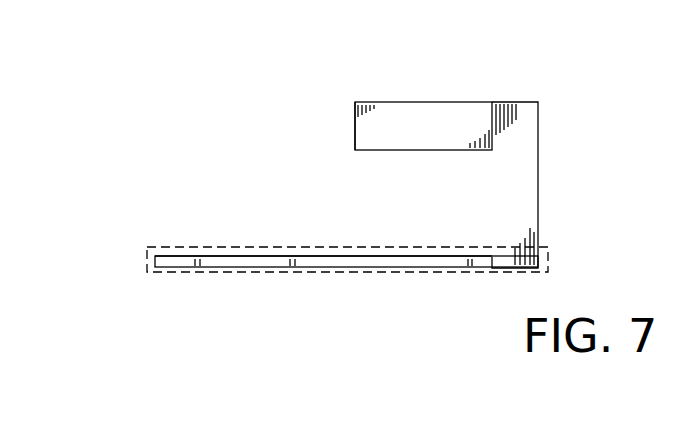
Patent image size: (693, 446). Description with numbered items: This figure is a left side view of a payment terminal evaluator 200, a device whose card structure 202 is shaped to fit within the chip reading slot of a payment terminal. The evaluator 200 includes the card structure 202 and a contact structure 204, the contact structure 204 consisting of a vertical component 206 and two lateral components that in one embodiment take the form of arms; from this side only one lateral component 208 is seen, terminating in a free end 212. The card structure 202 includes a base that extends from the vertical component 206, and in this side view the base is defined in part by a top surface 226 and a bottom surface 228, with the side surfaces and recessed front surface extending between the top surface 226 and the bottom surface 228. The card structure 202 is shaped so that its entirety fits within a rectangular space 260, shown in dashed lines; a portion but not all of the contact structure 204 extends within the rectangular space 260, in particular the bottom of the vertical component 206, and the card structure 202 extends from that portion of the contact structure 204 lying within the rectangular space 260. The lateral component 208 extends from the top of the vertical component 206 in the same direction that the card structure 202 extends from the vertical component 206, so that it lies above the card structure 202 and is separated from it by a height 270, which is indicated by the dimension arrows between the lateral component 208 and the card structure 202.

The payment terminal evaluator 200 is at (244, 86).
The card structure 202 is at (236, 232).
The contact structure 204 is at (562, 87).
The vertical component 206 is at (524, 178).
The lateral component 208 is at (420, 117).
The free end 212 is at (353, 120).
The top surface 226 is at (307, 256).
The bottom surface 228 is at (405, 267).
The rectangular space 260 is at (155, 247).
The height 270 is at (373, 151).